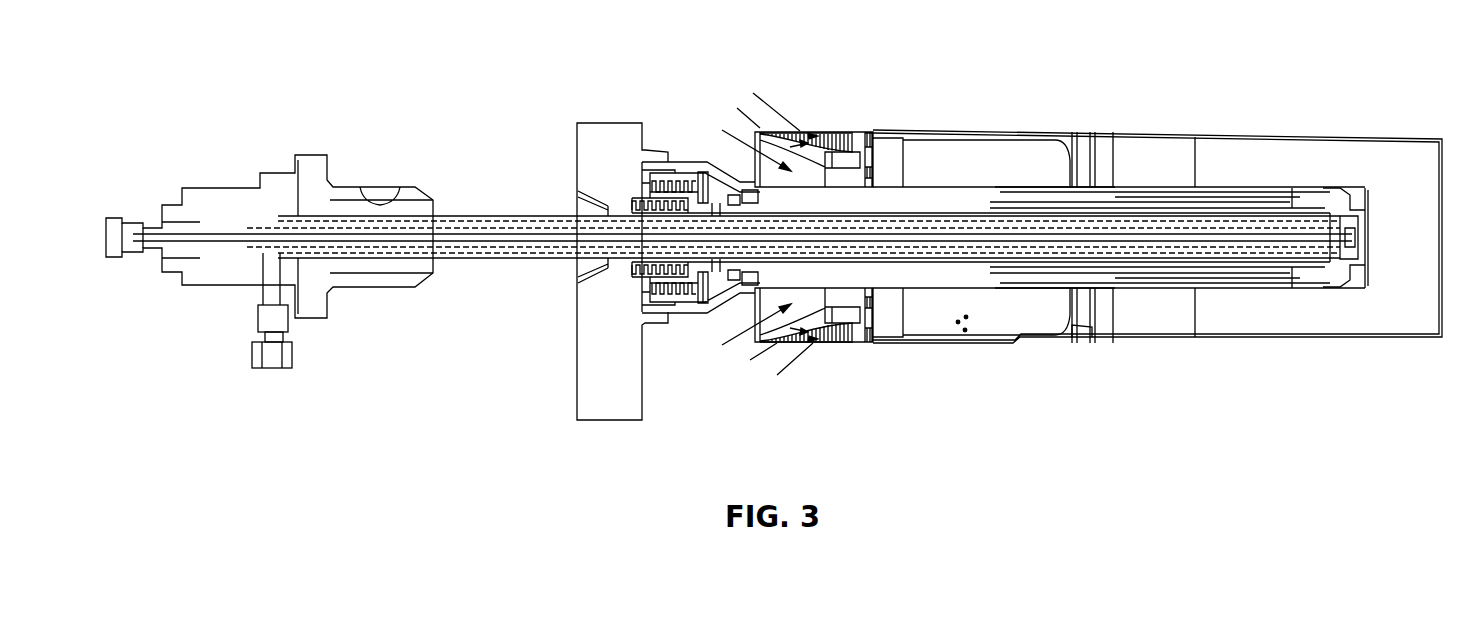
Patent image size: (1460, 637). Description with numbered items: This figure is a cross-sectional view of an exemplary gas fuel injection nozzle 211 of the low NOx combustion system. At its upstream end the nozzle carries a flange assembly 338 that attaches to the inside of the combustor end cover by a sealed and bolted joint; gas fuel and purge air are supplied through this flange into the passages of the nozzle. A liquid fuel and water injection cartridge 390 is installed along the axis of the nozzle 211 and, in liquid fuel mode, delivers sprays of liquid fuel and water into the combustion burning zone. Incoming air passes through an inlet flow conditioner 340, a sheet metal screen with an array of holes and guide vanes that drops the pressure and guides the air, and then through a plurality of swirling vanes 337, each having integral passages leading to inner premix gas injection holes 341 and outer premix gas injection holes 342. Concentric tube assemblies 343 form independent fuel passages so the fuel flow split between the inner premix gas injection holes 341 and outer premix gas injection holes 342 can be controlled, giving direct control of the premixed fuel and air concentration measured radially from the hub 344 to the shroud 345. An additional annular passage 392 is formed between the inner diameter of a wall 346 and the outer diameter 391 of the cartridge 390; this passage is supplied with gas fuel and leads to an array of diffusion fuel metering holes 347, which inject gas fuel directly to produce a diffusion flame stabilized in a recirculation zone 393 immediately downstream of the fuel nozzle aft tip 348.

The fuel injection nozzle 211 is at (585, 53).
The liquid fuel and water injection cartridge 390 is at (350, 187).
The flange assembly 338 is at (587, 403).
The concentric tube assemblies 343 is at (793, 200).
The inlet flow conditioner 340 is at (823, 343).
The shroud 345 is at (1163, 338).
The outer premix gas injection holes 342 is at (960, 150).
The swirling vanes 337 is at (1043, 322).
The inner premix gas injection holes 341 is at (973, 185).
The hub 344 is at (1138, 187).
The wall 346 is at (1207, 197).
The annular passage 392 is at (1255, 210).
The outer diameter 391 is at (1297, 210).
The fuel nozzle aft tip 348 is at (1352, 212).
The diffusion fuel metering holes 347 is at (1350, 212).
The recirculation zone 393 is at (1437, 277).